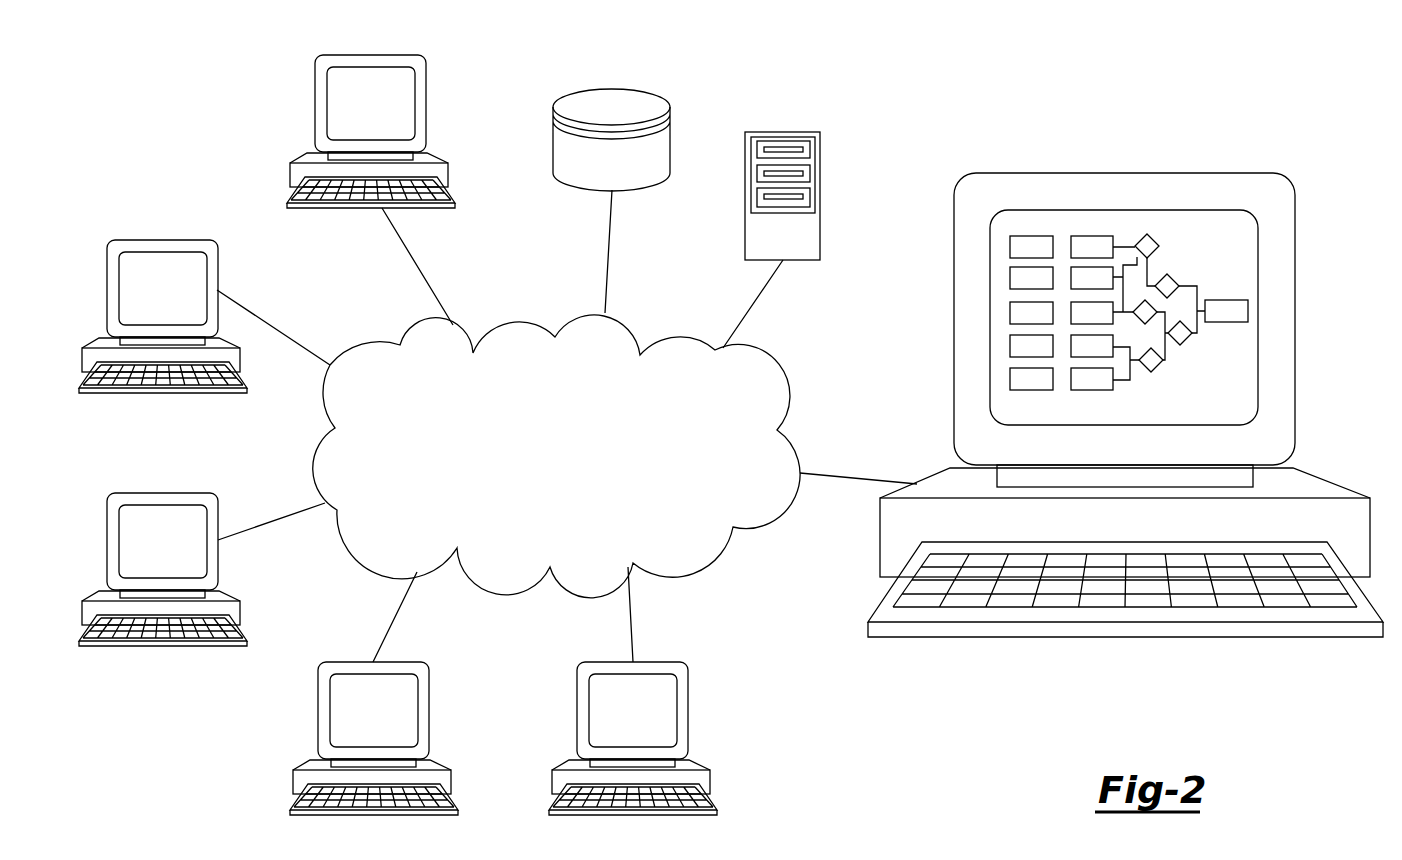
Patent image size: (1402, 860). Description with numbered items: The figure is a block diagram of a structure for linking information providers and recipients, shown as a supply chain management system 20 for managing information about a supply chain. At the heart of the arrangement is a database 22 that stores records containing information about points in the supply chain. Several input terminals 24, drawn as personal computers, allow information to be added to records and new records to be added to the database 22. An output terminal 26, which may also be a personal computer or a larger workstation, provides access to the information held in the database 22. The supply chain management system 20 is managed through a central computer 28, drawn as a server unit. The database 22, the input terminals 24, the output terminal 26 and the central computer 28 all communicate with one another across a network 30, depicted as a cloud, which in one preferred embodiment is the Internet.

The supply chain management system 20 is at (1020, 105).
The database 22 is at (600, 87).
The input terminal 24 is at (315, 104).
The output terminal 26 is at (708, 767).
The central computer 28 is at (782, 132).
The network 30 is at (553, 479).